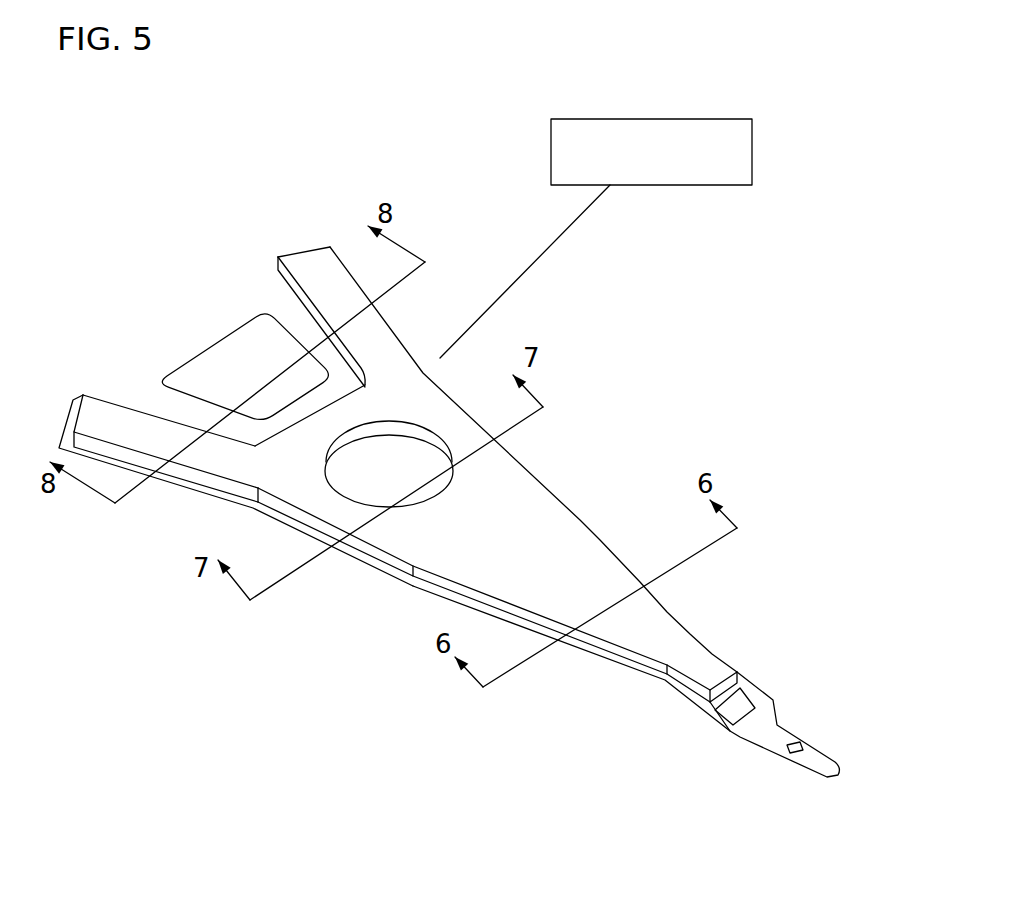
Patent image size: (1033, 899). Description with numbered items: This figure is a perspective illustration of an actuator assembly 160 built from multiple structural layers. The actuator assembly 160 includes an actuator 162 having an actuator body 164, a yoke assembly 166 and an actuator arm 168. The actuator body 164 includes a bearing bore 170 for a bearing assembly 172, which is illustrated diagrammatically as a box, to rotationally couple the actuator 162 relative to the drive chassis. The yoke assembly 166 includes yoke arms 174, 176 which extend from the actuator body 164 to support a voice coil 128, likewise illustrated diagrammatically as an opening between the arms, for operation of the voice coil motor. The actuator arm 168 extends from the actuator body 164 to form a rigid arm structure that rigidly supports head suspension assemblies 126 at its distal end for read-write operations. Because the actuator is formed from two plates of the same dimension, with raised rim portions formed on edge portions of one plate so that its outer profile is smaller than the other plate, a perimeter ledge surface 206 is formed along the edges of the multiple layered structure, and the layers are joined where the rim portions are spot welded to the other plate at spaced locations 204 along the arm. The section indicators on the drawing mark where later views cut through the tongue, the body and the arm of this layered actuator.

The head suspension assemblies 126 is at (787, 725).
The voice coil 128 is at (253, 305).
The actuator assembly 160 is at (657, 448).
The actuator 162 is at (535, 468).
The actuator body 164 is at (478, 535).
The yoke assembly 166 is at (331, 275).
The actuator arm 168 is at (660, 615).
The bearing bore 170 is at (410, 432).
The bearing assembly 172 is at (693, 98).
The yoke arm 174 is at (90, 418).
The yoke arm 176 is at (295, 257).
The spot weld locations 204 is at (615, 662).
The perimeter ledge surface 206 is at (203, 490).